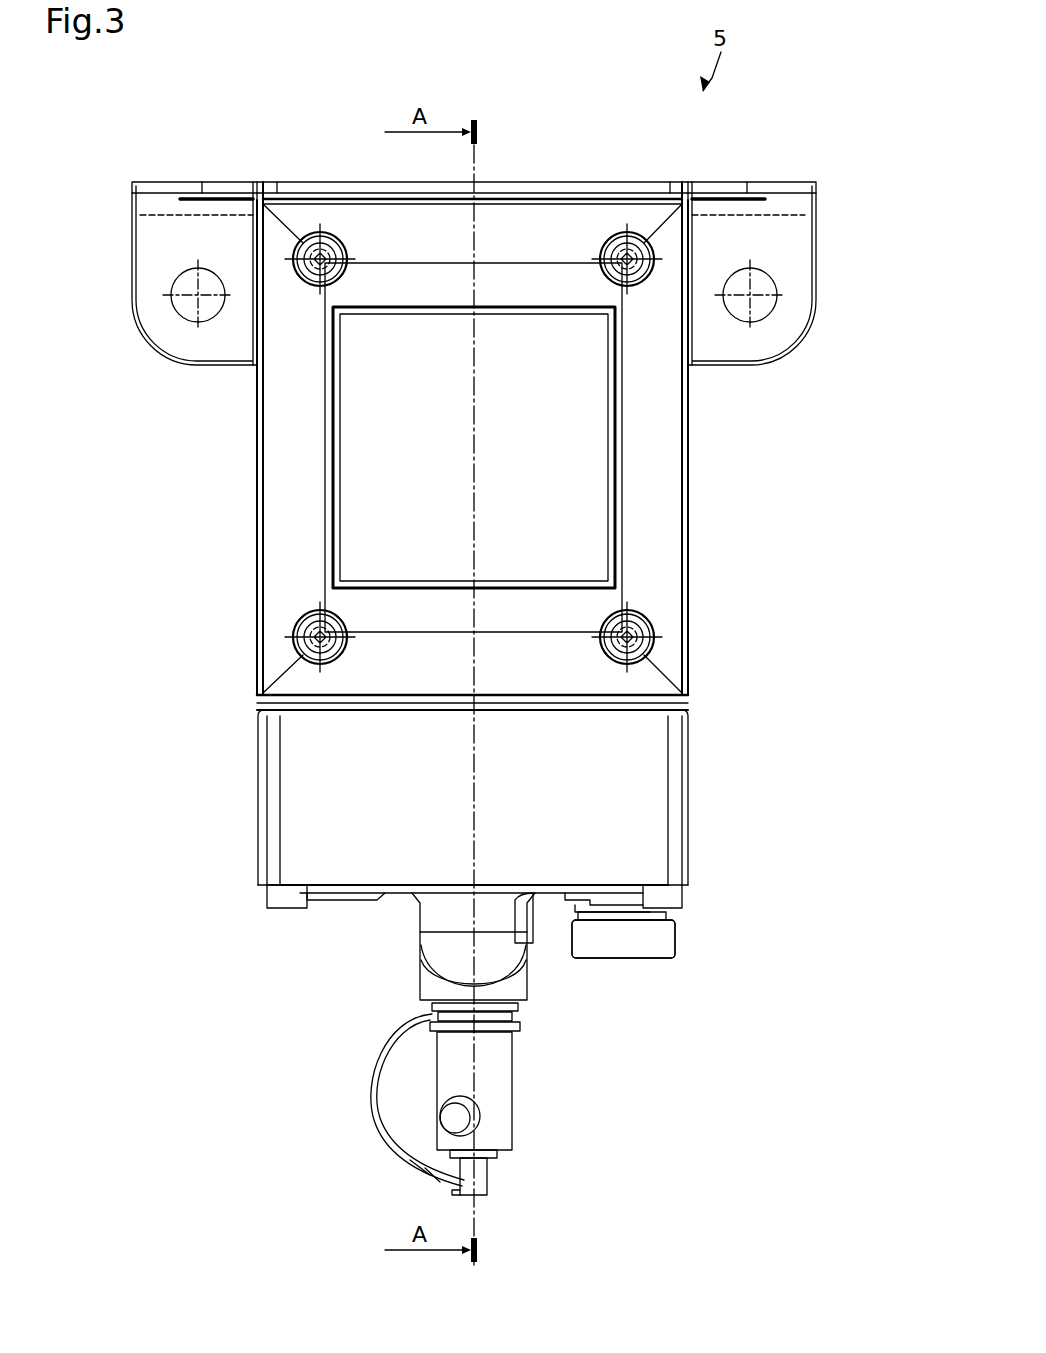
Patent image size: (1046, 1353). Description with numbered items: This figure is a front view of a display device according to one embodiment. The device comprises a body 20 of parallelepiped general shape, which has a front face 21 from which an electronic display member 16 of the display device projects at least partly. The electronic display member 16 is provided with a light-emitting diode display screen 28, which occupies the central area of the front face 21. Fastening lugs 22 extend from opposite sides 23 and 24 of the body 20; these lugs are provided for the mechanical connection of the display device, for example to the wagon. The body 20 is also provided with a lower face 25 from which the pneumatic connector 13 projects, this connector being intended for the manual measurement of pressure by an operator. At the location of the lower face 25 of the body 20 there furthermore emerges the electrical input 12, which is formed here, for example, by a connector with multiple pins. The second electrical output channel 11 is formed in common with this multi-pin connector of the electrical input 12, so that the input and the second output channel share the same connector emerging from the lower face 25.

The second electrical output channel 11 is at (623, 939).
The electrical input 12 is at (672, 936).
The pneumatic connector 13 is at (500, 1076).
The electronic display member 16 is at (286, 542).
The body 20 is at (258, 790).
The front face 21 is at (690, 784).
The fastening lugs 22 is at (150, 268).
The side 23 is at (258, 474).
The side 24 is at (690, 455).
The lower face 25 is at (322, 906).
The light-emitting diode display screen 28 is at (440, 448).